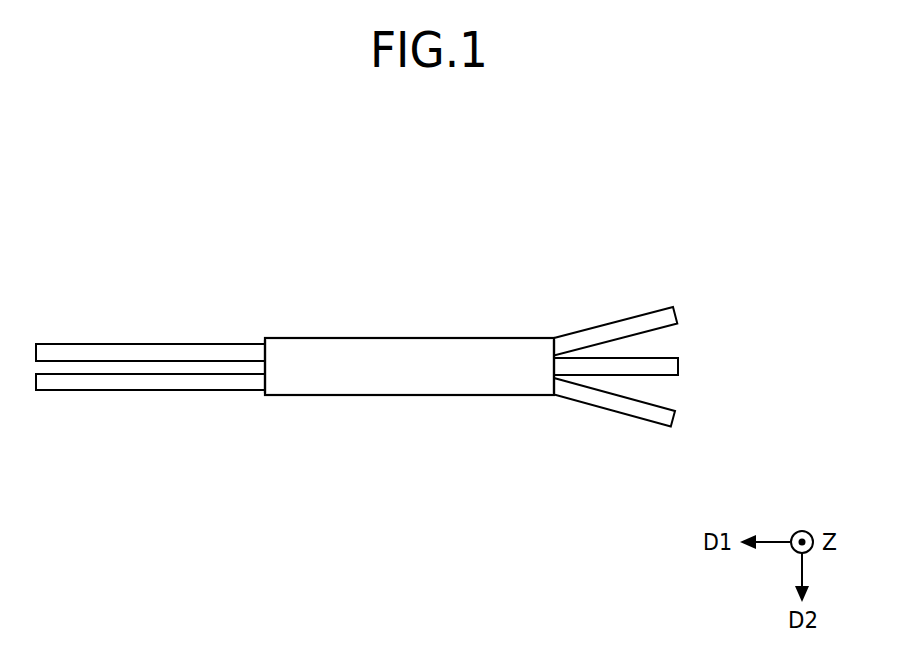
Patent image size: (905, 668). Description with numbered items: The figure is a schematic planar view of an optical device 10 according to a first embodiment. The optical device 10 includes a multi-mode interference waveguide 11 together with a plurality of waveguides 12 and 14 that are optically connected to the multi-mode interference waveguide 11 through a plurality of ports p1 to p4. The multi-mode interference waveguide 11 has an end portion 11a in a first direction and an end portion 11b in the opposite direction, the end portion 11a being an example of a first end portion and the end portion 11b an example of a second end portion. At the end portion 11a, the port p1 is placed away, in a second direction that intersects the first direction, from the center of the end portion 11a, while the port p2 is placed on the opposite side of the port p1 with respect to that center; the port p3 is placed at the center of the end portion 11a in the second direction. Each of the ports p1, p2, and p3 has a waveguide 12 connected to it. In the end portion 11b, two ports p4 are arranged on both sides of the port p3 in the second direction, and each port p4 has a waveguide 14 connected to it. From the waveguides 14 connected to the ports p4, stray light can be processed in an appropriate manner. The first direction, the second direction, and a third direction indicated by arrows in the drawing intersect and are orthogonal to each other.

The optical device 10 is at (533, 186).
The multi-mode interference waveguide 11 is at (417, 329).
The end portion 11a is at (265, 367).
The end portion 11b is at (557, 377).
The waveguide 12 is at (85, 353).
The waveguide 14 is at (680, 309).
The port p1 is at (262, 388).
The port p2 is at (262, 345).
The port p3 is at (570, 354).
The port p4 is at (560, 356).